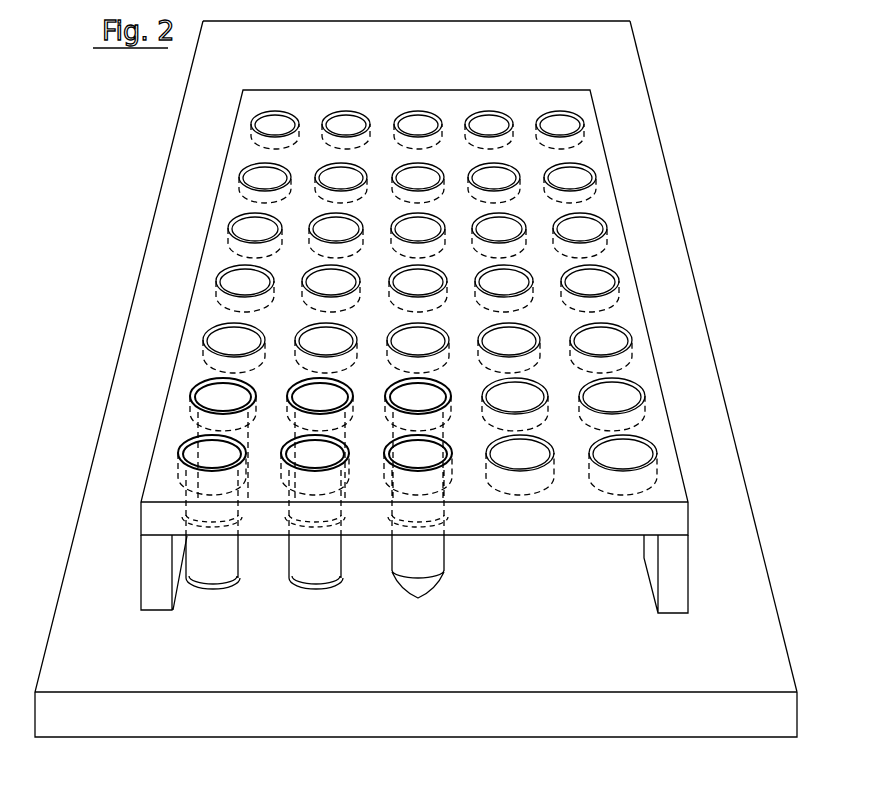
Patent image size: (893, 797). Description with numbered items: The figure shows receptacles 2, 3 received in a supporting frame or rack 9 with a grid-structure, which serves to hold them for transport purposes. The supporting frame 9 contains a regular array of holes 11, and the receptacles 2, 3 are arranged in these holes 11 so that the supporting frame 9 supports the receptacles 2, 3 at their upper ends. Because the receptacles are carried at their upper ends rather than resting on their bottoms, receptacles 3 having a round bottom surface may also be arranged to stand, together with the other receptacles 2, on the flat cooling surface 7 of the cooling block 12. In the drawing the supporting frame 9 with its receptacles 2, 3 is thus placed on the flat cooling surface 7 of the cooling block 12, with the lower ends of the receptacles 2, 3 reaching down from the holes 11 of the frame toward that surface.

The receptacle 2 is at (313, 562).
The receptacle having a round bottom surface 3 is at (420, 551).
The flat cooling surface 7 is at (707, 473).
The supporting frame 9 is at (637, 277).
The holes 11 is at (578, 222).
The cooling block 12 is at (715, 346).